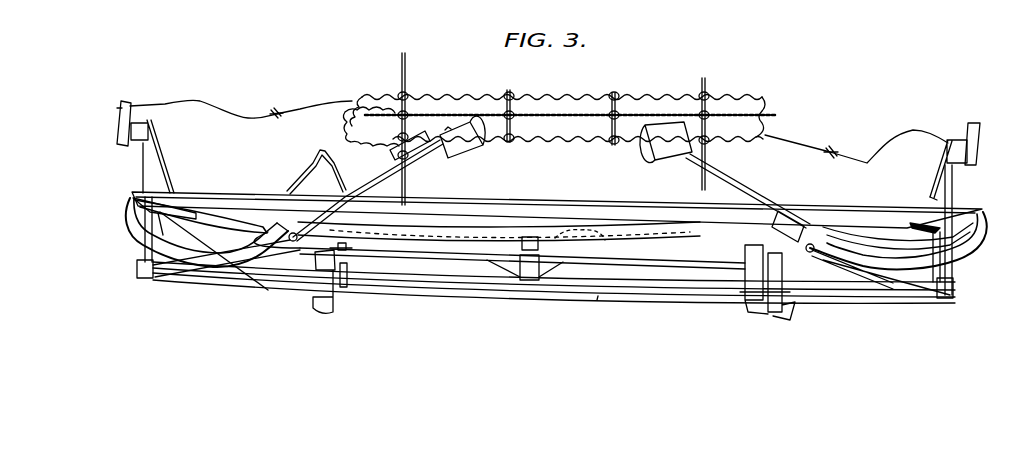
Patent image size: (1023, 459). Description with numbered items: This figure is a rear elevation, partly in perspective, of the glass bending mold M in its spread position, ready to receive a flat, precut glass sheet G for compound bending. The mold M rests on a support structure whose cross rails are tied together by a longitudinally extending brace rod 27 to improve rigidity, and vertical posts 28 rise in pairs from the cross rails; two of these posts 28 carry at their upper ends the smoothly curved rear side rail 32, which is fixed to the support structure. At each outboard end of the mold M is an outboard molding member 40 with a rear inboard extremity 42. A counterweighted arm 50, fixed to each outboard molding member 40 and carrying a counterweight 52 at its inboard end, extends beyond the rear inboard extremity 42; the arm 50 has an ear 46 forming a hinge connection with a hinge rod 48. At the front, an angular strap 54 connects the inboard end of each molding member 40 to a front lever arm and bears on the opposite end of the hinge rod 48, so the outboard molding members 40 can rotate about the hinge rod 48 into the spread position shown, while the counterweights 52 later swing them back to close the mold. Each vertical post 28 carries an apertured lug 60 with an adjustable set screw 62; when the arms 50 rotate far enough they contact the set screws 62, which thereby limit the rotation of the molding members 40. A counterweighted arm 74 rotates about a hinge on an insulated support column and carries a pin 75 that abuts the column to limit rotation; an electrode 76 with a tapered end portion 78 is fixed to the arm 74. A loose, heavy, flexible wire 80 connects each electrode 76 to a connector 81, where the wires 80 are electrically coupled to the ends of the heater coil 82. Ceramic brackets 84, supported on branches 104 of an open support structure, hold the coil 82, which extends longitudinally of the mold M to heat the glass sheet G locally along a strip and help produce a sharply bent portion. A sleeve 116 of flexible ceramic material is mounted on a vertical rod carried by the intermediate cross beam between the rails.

The glass sheet G is at (564, 196).
The brace rod 27 is at (640, 300).
The vertical posts 28 is at (755, 298).
The rear side rail 32 is at (499, 238).
The outboard molding members 40 is at (130, 220).
The rear inboard extremities 42 is at (262, 222).
The ear 46 is at (270, 228).
The hinge rod 48 is at (291, 242).
The counterweighted arm 50 is at (380, 184).
The counterweight 52 is at (460, 150).
The angular strap 54 is at (320, 158).
The apertured lug 60 is at (350, 252).
The set screw 62 is at (344, 242).
The counterweighted arm 74 is at (935, 166).
The pin 75 is at (955, 185).
The electrode 76 is at (120, 106).
The tapered end portion 78 is at (131, 107).
The flexible wire 80 is at (222, 106).
The connector 81 is at (280, 110).
The heater coil 82 is at (378, 95).
The ceramic brackets 84 is at (627, 140).
The branches 104 is at (570, 105).
The sleeve 116 is at (546, 252).
The glass bending mold M is at (595, 303).